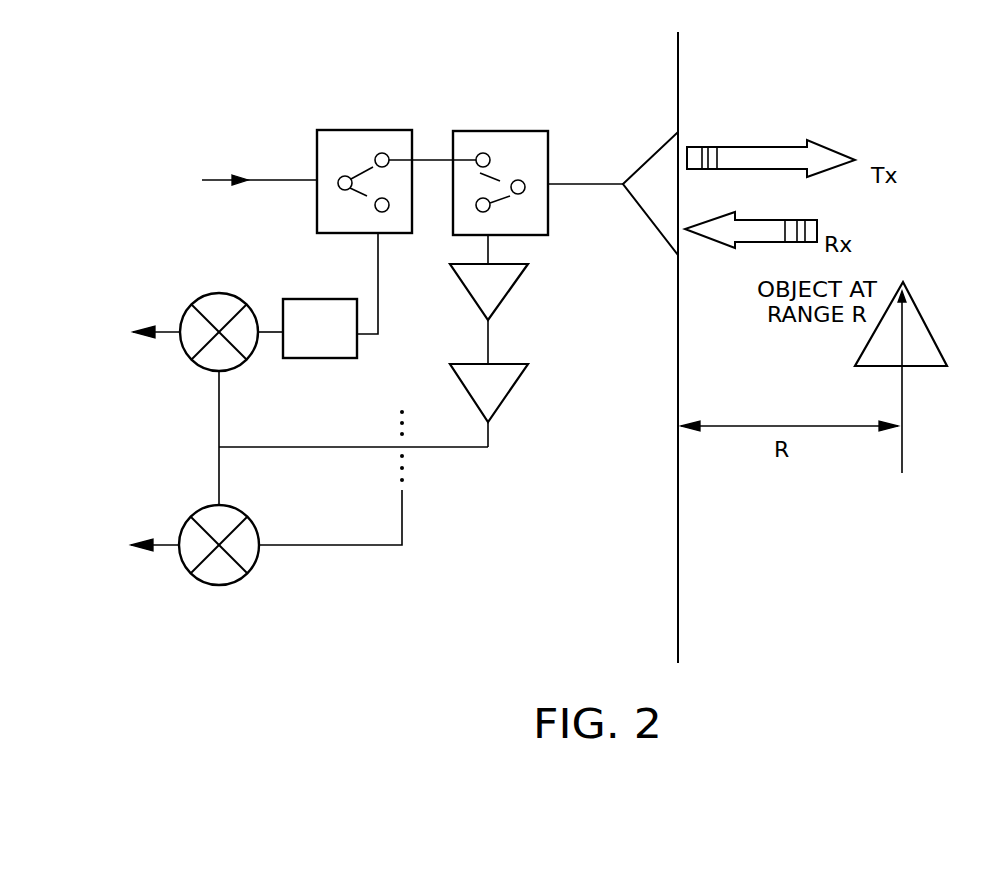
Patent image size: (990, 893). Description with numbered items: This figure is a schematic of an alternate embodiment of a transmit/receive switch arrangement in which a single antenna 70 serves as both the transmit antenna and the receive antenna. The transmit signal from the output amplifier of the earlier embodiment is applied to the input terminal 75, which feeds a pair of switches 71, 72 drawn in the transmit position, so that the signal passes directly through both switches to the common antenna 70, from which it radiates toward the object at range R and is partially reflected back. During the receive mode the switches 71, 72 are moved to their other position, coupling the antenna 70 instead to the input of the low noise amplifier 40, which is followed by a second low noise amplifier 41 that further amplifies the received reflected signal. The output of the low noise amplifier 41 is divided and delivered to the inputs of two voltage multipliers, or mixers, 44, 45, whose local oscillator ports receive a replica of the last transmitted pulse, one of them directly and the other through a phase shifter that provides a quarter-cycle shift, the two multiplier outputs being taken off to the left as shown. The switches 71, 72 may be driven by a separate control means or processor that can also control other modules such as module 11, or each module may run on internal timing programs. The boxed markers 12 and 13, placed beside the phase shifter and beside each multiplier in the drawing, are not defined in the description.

The input terminal 75 is at (249, 168).
The switch 71 is at (368, 129).
The switch 72 is at (503, 131).
The antenna 70 is at (657, 150).
The module 11 is at (554, 327).
The low noise amplifier 40 is at (500, 304).
The low noise amplifier 41 is at (497, 410).
The phase shifter 12 is at (303, 299).
The voltage multiplier (mixer) 13 is at (248, 482).
The voltage multiplier 45 is at (195, 365).
The voltage multiplier 44 is at (193, 576).